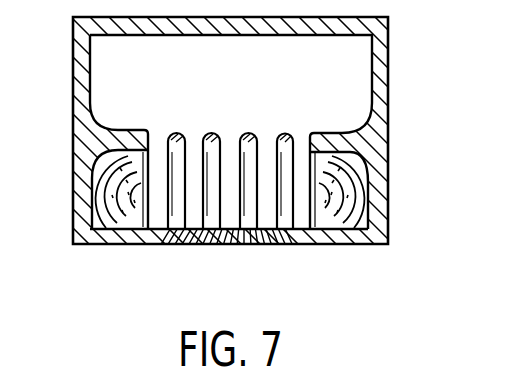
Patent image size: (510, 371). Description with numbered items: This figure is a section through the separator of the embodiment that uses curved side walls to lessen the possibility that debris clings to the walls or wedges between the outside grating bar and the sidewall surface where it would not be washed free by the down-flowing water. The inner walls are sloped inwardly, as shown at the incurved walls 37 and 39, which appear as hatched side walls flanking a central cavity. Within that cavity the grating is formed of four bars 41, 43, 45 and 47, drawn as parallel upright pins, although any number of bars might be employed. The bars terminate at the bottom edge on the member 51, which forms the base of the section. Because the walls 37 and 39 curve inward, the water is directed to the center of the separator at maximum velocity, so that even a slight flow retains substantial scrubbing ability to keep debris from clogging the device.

The inner wall 37 is at (93, 171).
The inner wall 39 is at (365, 173).
The bar 41 is at (169, 131).
The bar 43 is at (212, 132).
The bar 45 is at (248, 132).
The bar 47 is at (286, 132).
The member 51 is at (241, 245).